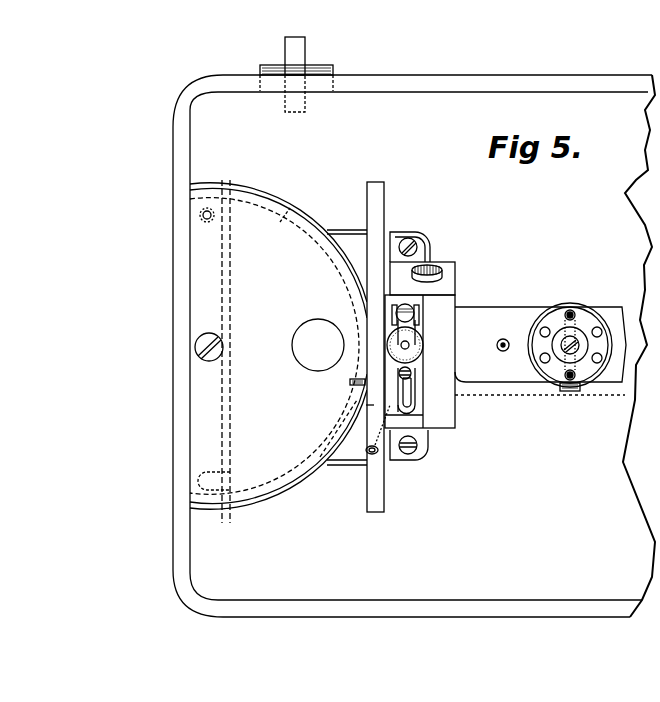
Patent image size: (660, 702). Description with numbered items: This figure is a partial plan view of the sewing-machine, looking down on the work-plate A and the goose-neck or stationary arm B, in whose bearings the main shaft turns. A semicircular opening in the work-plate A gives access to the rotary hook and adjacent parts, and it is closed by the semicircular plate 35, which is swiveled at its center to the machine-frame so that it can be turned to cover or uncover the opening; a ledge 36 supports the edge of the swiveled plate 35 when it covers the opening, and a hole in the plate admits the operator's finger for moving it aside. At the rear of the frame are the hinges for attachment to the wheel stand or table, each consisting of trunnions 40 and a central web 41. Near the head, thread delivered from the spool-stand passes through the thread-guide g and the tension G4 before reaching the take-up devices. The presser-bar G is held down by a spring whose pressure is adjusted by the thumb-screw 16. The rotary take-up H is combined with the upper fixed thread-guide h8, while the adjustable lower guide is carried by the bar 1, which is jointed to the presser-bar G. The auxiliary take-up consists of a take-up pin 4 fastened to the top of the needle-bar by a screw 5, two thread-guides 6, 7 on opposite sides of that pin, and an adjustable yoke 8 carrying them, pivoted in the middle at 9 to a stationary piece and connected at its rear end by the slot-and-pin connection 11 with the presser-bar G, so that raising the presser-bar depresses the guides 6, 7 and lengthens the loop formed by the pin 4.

The work-plate A is at (414, 346).
The central web 41 is at (306, 49).
The trunnions 40 is at (262, 71).
The semicircular plate 35 is at (278, 351).
The ledge 36 is at (278, 224).
The rotary take-up H is at (367, 340).
The presser-bar G is at (390, 302).
The slot-and-pin connection 11 is at (416, 310).
The adjustable yoke 8 is at (419, 326).
The thumb-screw 16 is at (424, 344).
The screw 5 is at (413, 371).
The thread-guide 7 is at (419, 393).
The take-up pin 4 is at (401, 392).
The thread-guide 6 is at (393, 402).
The pivot 9 is at (390, 356).
The bar 1 is at (361, 386).
The thread-guide h8 is at (366, 450).
The goose-neck or stationary arm B is at (540, 351).
The tension G4 is at (584, 322).
The thread-guide g is at (571, 392).